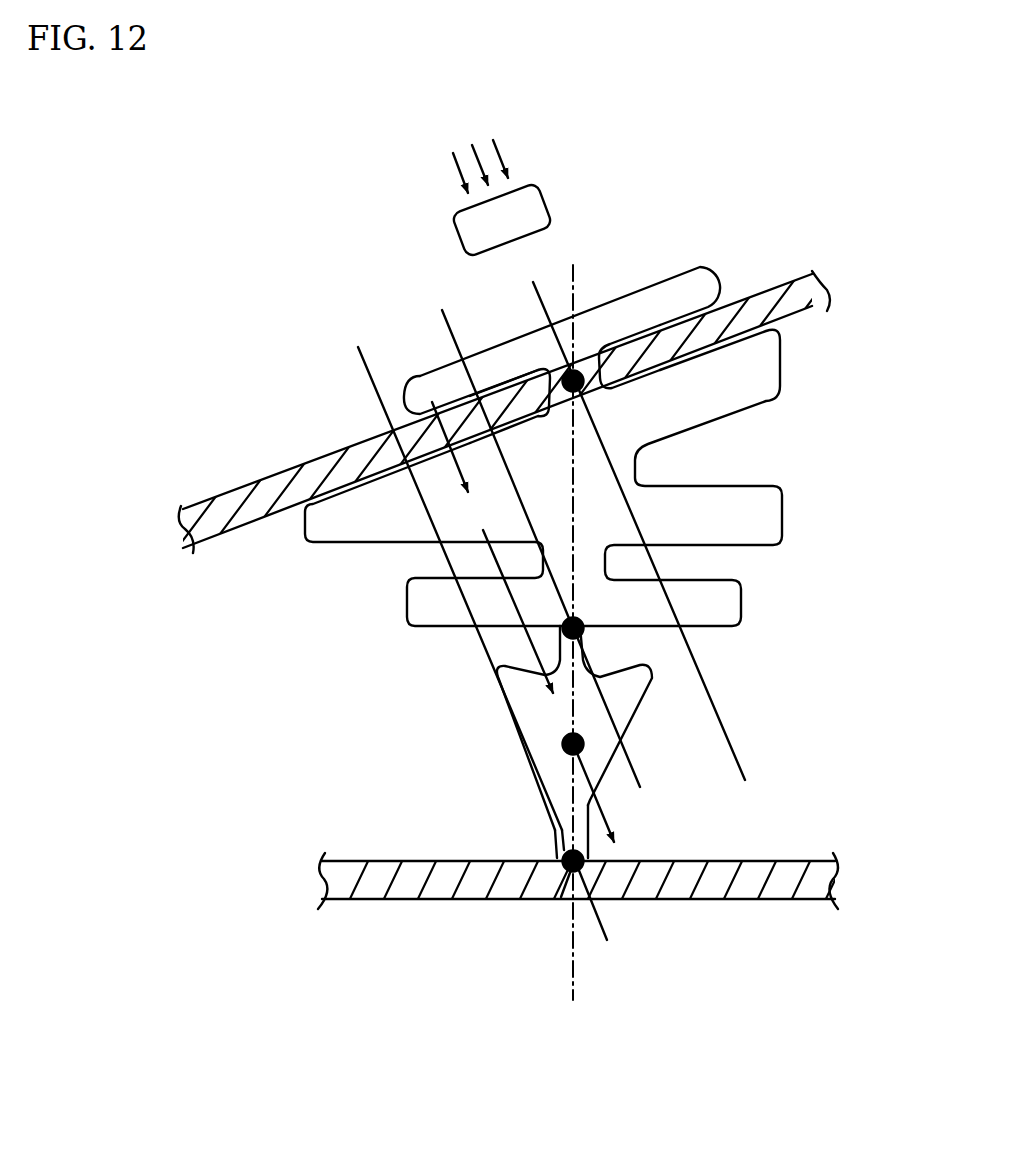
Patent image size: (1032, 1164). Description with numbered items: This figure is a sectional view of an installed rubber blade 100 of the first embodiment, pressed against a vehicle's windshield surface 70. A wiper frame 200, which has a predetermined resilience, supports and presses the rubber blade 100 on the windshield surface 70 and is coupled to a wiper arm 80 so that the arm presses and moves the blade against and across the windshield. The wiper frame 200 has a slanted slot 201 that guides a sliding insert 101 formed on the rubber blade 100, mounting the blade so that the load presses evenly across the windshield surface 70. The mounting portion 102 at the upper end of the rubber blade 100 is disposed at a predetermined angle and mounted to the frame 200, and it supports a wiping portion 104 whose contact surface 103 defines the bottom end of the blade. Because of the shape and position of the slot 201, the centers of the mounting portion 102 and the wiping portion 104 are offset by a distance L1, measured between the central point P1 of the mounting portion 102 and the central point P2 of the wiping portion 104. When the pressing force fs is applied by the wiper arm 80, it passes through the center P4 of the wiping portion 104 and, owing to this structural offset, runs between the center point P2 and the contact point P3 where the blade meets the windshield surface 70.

The wiper arm 80 is at (543, 204).
The wiper frame 200 is at (767, 298).
The rubber blade 100 is at (620, 521).
The mounting portion 102 is at (672, 278).
The slot 201 is at (655, 366).
The sliding insert 101 is at (545, 427).
The wiping portion 104 is at (637, 690).
The contact surface 103 is at (558, 852).
The windshield surface 70 is at (370, 859).
The central point of the mounting portion P1 is at (580, 379).
The central point of the wiping portion P2 is at (584, 627).
The contact point P3 is at (580, 866).
The center of the wiping portion P4 is at (584, 740).
The pressing force fs is at (415, 368).
The offset distance L1 is at (538, 306).